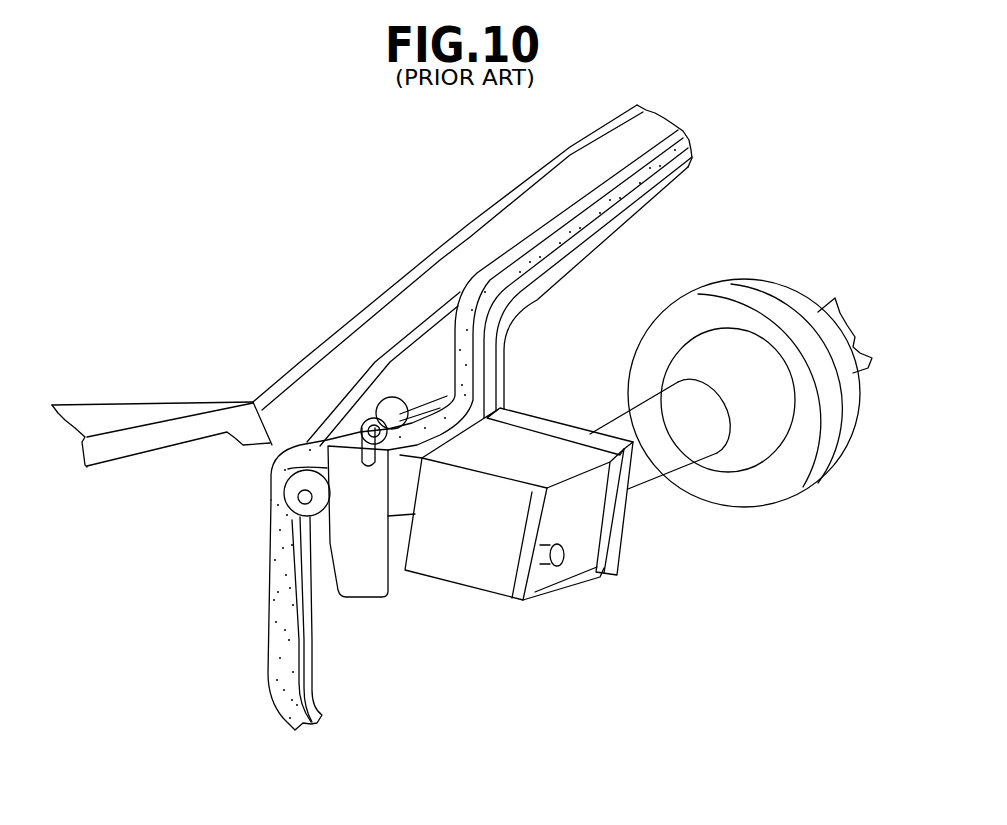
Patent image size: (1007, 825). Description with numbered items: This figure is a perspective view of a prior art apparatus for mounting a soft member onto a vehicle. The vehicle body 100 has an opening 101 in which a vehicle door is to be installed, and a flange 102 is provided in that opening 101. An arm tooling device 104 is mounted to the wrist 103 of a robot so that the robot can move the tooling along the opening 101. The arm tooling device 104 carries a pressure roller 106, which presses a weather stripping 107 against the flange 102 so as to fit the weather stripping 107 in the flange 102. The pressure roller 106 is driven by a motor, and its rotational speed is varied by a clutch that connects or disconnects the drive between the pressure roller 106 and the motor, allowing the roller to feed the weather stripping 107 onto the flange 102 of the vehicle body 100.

The vehicle body 100 is at (123, 398).
The opening 101 is at (268, 622).
The flange 102 is at (388, 355).
The wrist 103 is at (650, 468).
The arm tooling device 104 is at (512, 575).
The pressure roller 106 is at (296, 482).
The weather stripping 107 is at (637, 208).